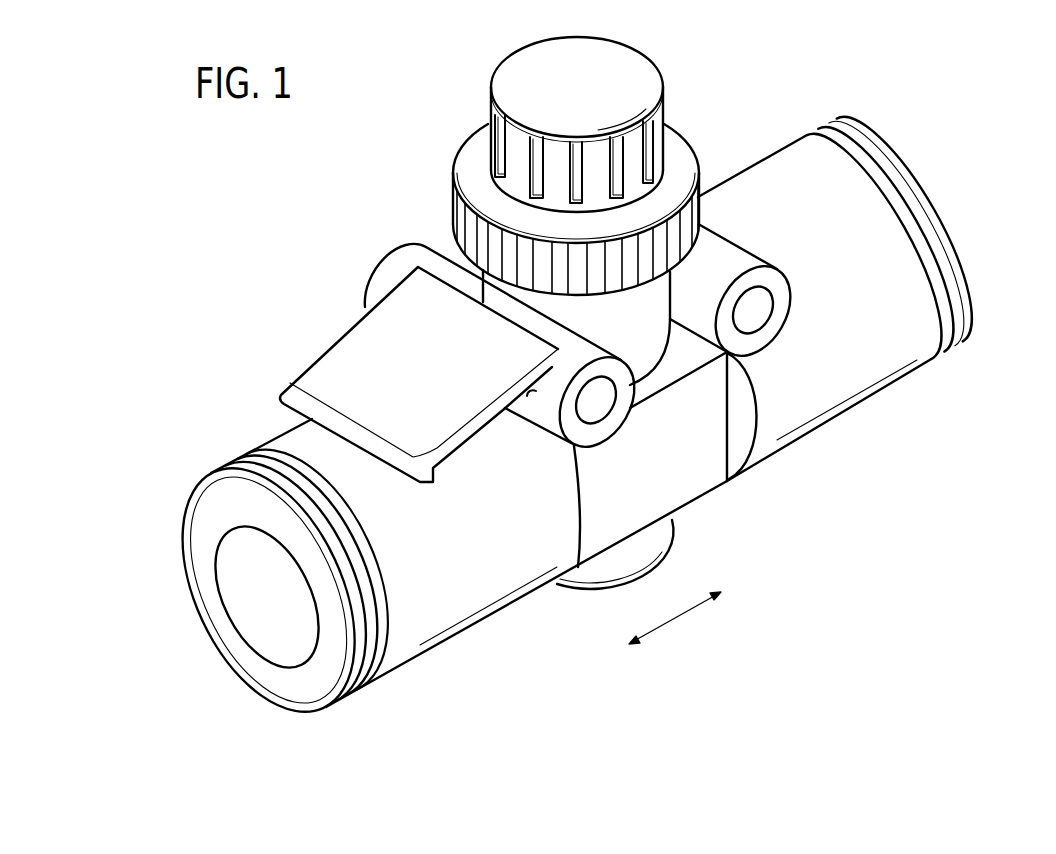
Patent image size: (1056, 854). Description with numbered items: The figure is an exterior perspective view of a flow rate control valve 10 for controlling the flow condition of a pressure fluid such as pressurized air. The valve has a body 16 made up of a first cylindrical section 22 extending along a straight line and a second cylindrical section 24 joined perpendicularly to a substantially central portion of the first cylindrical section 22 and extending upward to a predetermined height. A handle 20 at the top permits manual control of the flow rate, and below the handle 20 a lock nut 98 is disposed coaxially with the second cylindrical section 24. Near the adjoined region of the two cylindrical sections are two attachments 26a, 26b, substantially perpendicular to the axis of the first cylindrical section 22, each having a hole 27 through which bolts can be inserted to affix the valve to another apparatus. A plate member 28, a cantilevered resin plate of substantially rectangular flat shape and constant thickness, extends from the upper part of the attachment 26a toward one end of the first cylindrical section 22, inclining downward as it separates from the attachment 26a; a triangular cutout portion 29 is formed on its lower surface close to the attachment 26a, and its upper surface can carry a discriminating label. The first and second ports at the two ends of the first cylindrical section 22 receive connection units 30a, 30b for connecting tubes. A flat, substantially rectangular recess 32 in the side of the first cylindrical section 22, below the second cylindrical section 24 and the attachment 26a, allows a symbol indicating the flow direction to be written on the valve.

The flow rate control valve 10 is at (777, 62).
The body 16 is at (862, 407).
The handle 20 is at (537, 60).
The first cylindrical section 22 is at (513, 573).
The second cylindrical section 24 is at (658, 362).
The attachment 26a is at (398, 258).
The attachment 26b is at (720, 253).
The hole 27 is at (597, 407).
The plate member 28 is at (341, 334).
The cutout portion 29 is at (531, 394).
The connection unit 30a is at (220, 666).
The connection unit 30b is at (940, 190).
The recess 32 is at (700, 478).
The lock nut 98 is at (680, 170).